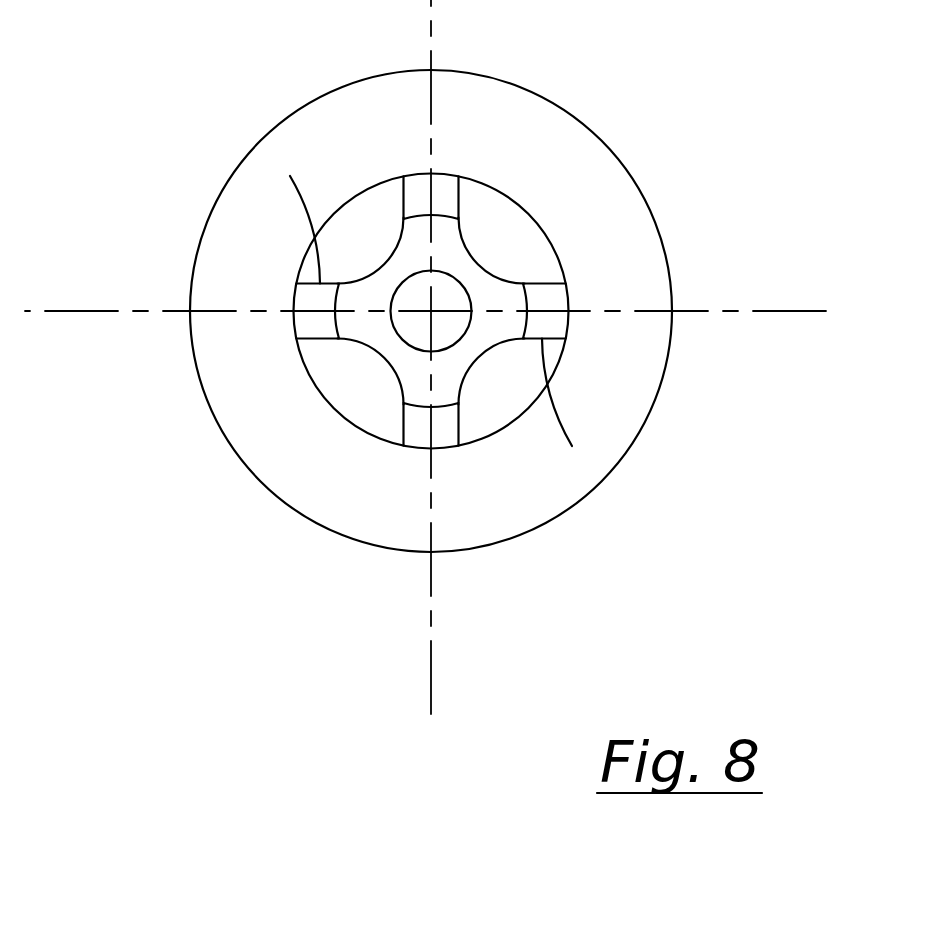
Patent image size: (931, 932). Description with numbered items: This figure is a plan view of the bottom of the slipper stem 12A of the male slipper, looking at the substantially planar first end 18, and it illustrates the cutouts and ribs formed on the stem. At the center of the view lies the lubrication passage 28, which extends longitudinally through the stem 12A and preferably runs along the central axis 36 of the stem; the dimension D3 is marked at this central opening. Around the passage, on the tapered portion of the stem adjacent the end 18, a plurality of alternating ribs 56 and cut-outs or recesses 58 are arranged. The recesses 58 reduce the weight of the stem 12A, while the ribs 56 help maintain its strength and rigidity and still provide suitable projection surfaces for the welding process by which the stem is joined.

The stem 12A is at (524, 82).
The ribs 56 is at (348, 200).
The cut-outs or recesses 58 is at (490, 257).
The central axis 36 is at (431, 311).
The first end 18 is at (358, 332).
The lubrication passage 28 is at (403, 338).
The bore diameter D3 is at (332, 450).